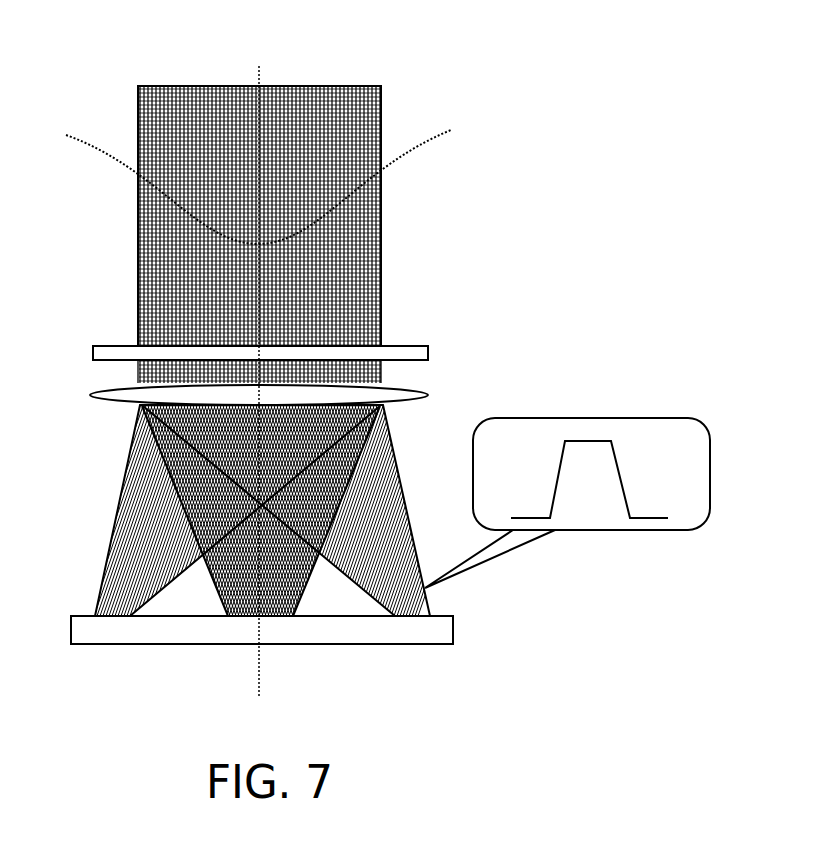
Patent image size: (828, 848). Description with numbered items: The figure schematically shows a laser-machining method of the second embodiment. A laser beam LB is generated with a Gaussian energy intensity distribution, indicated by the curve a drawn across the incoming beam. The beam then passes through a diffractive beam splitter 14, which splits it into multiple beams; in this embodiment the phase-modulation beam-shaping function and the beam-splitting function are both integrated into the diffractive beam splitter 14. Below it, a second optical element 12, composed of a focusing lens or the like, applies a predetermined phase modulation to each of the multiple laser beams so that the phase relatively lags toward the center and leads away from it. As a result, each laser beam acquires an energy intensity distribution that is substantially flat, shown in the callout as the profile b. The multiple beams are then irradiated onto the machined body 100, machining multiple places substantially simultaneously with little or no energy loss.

The laser beam LB is at (356, 76).
The Gaussian distribution a is at (77, 128).
The diffractive beam splitter 14 is at (420, 345).
The second optical element 12 is at (420, 387).
The machined body 100 is at (445, 622).
The substantially flat distribution b is at (645, 505).